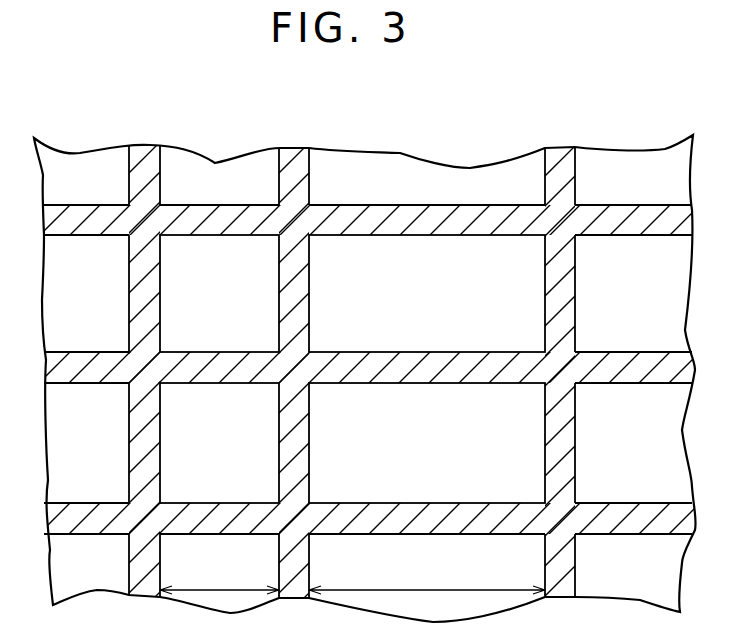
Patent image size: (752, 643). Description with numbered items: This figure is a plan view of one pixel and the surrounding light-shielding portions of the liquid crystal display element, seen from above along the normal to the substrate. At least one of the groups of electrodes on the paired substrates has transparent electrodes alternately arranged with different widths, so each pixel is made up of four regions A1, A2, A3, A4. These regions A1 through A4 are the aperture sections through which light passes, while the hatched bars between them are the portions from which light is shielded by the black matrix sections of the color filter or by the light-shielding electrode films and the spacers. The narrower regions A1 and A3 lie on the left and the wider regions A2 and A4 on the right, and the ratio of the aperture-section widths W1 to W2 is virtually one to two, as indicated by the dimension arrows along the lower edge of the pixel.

The first region A1 is at (222, 253).
The second region A2 is at (440, 260).
The third region A3 is at (187, 433).
The fourth region A4 is at (522, 445).
The first aperture-section width W1 is at (219, 579).
The second aperture-section width W2 is at (427, 579).